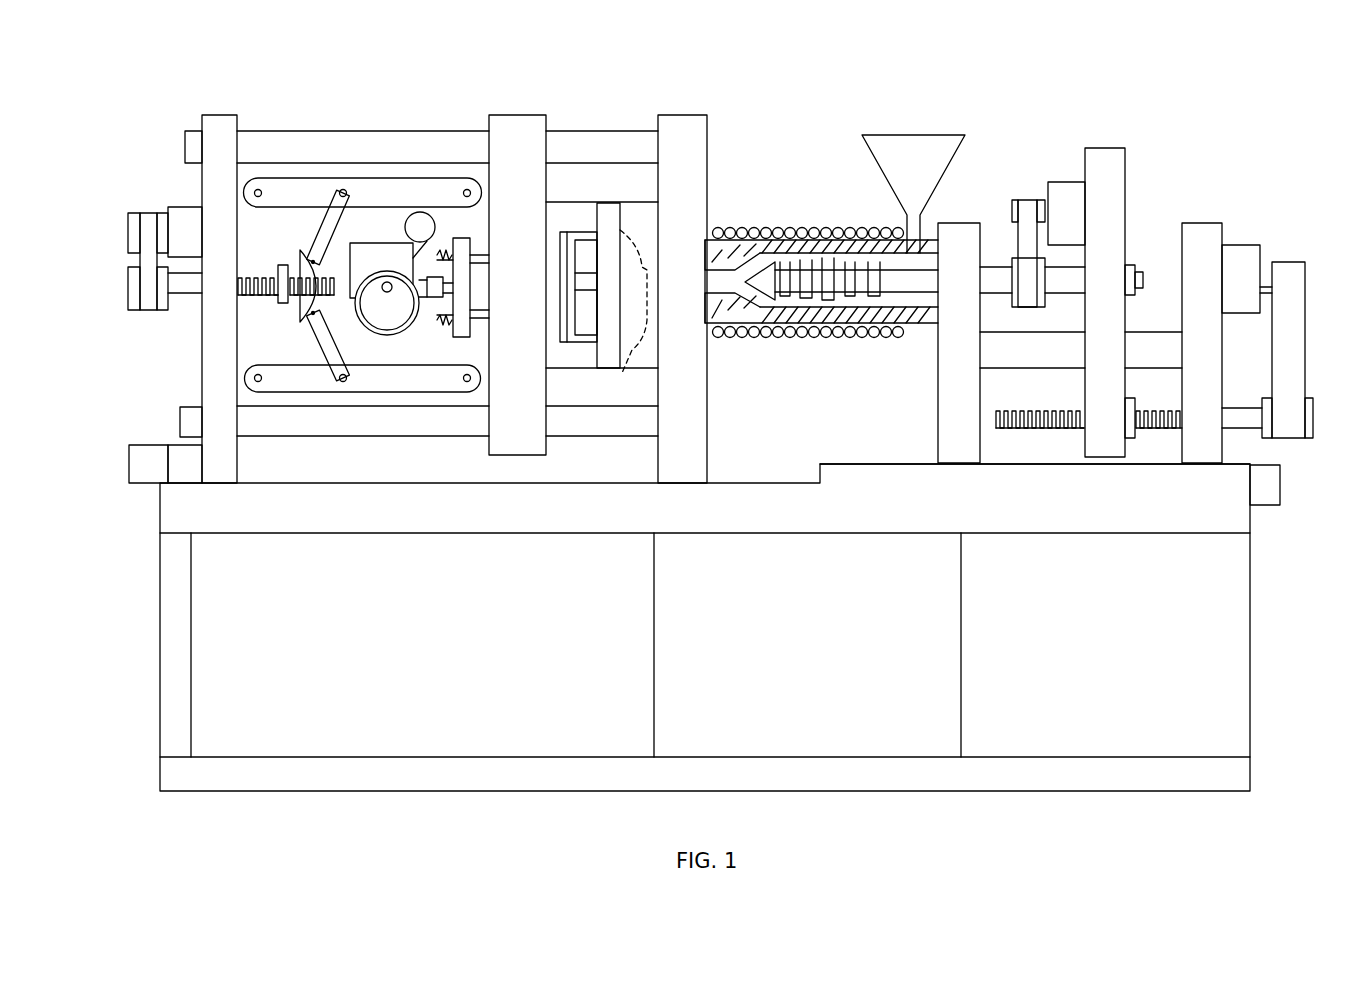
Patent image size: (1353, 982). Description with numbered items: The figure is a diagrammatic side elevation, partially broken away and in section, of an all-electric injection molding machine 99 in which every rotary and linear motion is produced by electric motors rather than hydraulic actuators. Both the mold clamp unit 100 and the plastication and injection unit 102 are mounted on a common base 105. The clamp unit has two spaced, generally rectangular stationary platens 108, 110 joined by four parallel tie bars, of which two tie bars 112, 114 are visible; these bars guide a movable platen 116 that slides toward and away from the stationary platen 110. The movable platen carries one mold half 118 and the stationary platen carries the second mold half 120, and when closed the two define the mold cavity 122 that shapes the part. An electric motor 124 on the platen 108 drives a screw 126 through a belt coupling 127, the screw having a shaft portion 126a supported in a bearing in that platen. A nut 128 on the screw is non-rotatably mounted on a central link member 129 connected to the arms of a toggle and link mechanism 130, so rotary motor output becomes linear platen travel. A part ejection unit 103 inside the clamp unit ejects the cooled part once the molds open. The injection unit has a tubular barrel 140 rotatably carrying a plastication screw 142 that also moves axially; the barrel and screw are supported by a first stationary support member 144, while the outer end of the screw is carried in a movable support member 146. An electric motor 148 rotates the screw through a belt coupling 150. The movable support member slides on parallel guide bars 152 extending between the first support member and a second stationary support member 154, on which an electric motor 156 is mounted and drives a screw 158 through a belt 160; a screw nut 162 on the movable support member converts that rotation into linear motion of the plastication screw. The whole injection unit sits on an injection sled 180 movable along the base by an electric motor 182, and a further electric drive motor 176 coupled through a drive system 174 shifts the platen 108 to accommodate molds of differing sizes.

The injection molding machine 99 is at (828, 66).
The mold clamp unit 100 is at (384, 60).
The plastication and injection unit 102 is at (1208, 136).
The part ejection unit 103 is at (386, 212).
The base 105 is at (730, 492).
The stationary platen 108 is at (208, 114).
The stationary platen 110 is at (696, 114).
The tie bar 112 is at (437, 133).
The tie bar 114 is at (397, 437).
The movable platen 116 is at (500, 114).
The mold half 118 is at (607, 203).
The mold half 120 is at (647, 372).
The mold cavity 122 is at (624, 374).
The electric motor 124 is at (183, 207).
The screw 126 is at (272, 268).
The shaft portion 126a is at (183, 285).
The belt coupling 127 is at (145, 303).
The nut 128 is at (294, 306).
The central link member 129 is at (298, 268).
The toggle and link mechanism 130 is at (307, 380).
The tubular barrel 140 is at (915, 330).
The plastication screw 142 is at (757, 303).
The first stationary support member 144 is at (935, 382).
The movable support member 146 is at (1099, 148).
The electric motor 148 is at (1072, 182).
The belt coupling 150 is at (1015, 228).
The guide bars 152 is at (1063, 355).
The second stationary support member 154 is at (1240, 347).
The electric motor 156 is at (1246, 247).
The screw 158 is at (1232, 410).
The belt 160 is at (1312, 225).
The screw nut 162 is at (1146, 385).
The drive system 174 is at (142, 428).
The electric drive motor 176 is at (147, 470).
The injection sled 180 is at (840, 463).
The electric motor 182 is at (1255, 490).